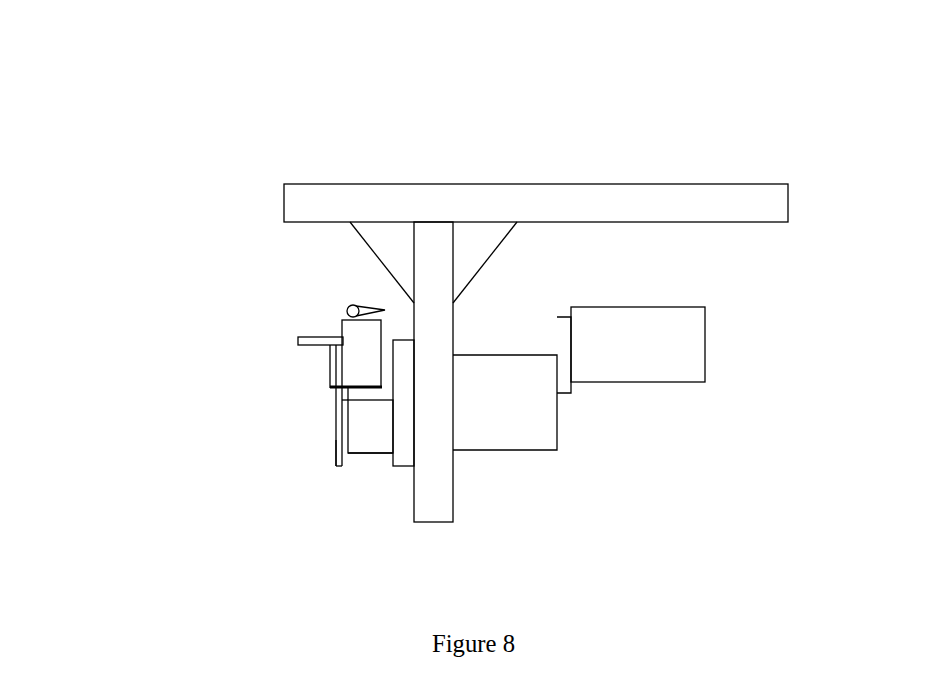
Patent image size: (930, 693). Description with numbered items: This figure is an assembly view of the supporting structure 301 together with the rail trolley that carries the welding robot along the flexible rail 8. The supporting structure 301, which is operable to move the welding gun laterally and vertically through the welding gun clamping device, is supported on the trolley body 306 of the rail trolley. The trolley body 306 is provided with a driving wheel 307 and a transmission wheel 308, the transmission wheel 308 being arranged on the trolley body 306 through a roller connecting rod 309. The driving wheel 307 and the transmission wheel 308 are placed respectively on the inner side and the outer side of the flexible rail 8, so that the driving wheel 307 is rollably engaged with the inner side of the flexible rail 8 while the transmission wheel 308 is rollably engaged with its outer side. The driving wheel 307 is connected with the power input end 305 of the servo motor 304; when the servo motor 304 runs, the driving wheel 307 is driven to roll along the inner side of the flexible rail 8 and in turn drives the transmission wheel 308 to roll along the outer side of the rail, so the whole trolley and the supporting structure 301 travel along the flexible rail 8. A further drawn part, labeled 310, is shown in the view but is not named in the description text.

The supporting structure 301 is at (284, 177).
The servo motor 304 is at (682, 380).
The power input end 305 is at (534, 445).
The trolley body 306 is at (345, 457).
The driving wheel 307 is at (368, 418).
The transmission wheel 308 is at (320, 403).
The roller connecting rod 309 is at (314, 370).
The clamping block 310 is at (333, 304).
The flexible rail 8 is at (327, 472).